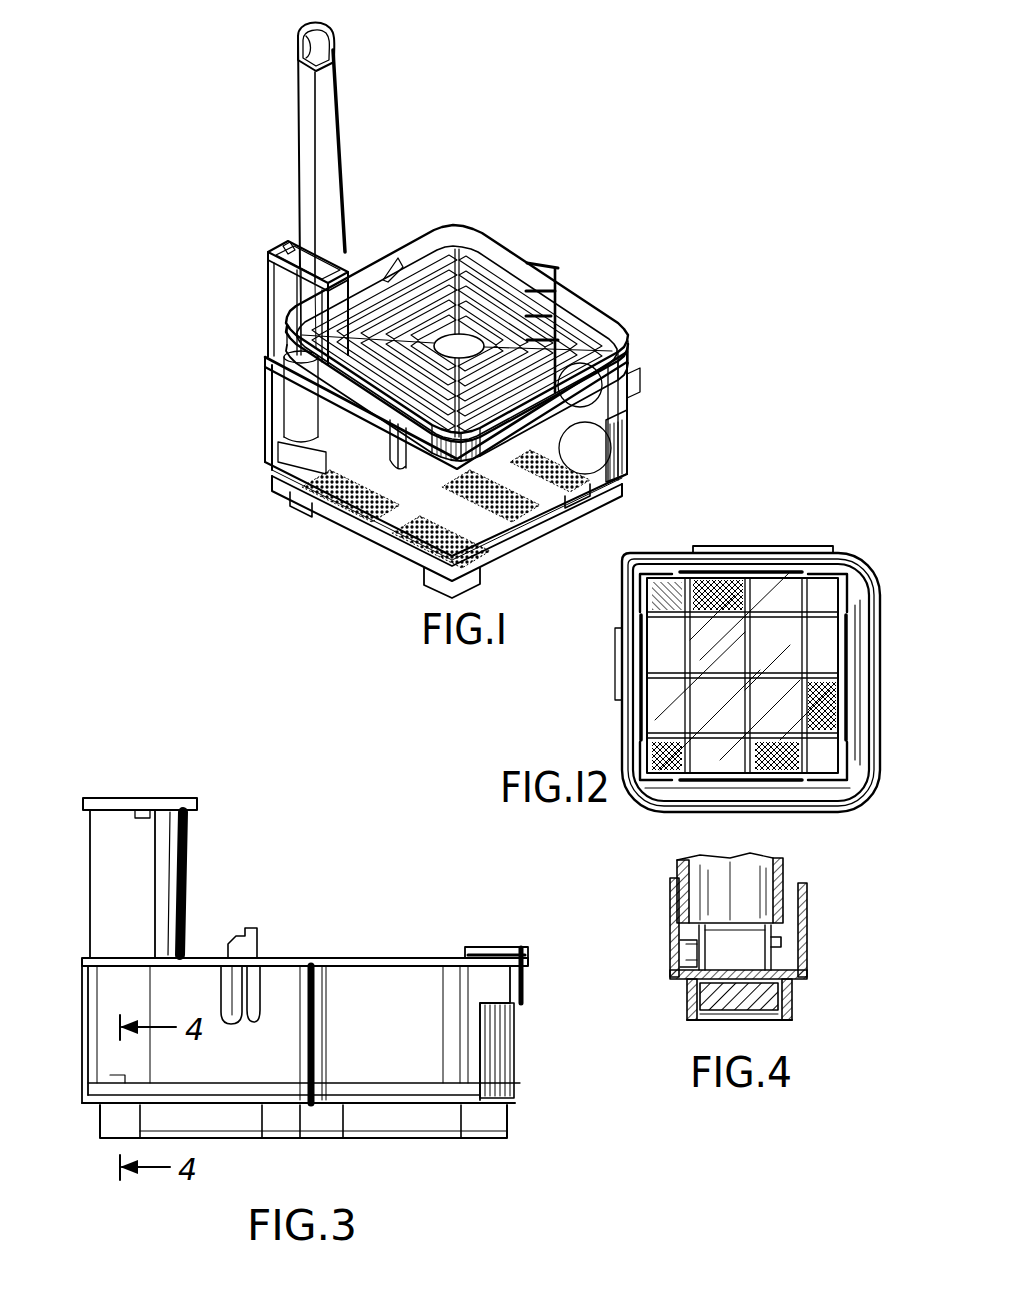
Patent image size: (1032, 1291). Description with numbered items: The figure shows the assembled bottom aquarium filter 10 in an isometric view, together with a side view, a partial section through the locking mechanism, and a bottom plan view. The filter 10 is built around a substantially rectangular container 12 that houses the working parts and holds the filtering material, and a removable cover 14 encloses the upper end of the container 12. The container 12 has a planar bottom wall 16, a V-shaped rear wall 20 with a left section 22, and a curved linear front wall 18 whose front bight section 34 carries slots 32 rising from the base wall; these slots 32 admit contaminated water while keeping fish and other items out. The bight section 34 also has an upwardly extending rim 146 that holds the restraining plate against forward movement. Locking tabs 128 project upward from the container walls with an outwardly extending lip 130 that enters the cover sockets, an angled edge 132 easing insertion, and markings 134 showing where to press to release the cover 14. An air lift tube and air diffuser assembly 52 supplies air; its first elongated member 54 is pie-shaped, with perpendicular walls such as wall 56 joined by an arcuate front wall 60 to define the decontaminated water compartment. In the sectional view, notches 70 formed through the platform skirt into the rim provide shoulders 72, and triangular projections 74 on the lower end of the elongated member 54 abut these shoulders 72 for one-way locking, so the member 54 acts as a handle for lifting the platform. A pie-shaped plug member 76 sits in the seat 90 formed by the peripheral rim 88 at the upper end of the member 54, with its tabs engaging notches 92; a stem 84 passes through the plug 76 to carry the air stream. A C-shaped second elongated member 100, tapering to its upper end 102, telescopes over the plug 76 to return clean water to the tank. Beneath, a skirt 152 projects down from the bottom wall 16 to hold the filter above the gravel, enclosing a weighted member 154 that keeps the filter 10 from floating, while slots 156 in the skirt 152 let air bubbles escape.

In FIG. 1, the bottom aquarium filter 10 is at (668, 281).
In FIG. 12, the bottom aquarium filter 10 is at (586, 681).
In FIG. 1, the container 12 is at (634, 377).
In FIG. 12, the container 12 is at (642, 556).
In FIG. 3, the container 12 is at (421, 945).
In FIG. 1, the cover 14 is at (523, 246).
In FIG. 12, the cover 14 is at (753, 544).
In FIG. 12, the bottom wall 16 is at (879, 580).
In FIG. 4, the bottom wall 16 is at (803, 981).
In FIG. 1, the front wall 18 is at (546, 478).
In FIG. 12, the front wall 18 is at (767, 800).
In FIG. 3, the front wall 18 is at (400, 1066).
In FIG. 1, the rear wall 20 is at (455, 466).
In FIG. 12, the rear wall 20 is at (623, 590).
In FIG. 3, the rear wall 20 is at (300, 1033).
In FIG. 1, the left section 22 is at (357, 468).
In FIG. 3, the left section 22 is at (110, 1052).
In FIG. 1, the slots 32 is at (629, 444).
In FIG. 3, the slots 32 is at (507, 1040).
In FIG. 1, the front bight section 34 is at (641, 393).
In FIG. 12, the front bight section 34 is at (845, 802).
In FIG. 3, the front bight section 34 is at (525, 978).
In FIG. 1, the air lift tube and air diffuser assembly 52 is at (289, 338).
In FIG. 1, the first elongated member 54 is at (284, 307).
In FIG. 3, the first elongated member 54 is at (194, 878).
In FIG. 4, the first elongated member 54 is at (792, 866).
In FIG. 3, the wall 56 is at (147, 920).
In FIG. 3, the arcuate front wall 60 is at (194, 846).
In FIG. 4, the notches 70 is at (686, 953).
In FIG. 4, the shoulders 72 is at (676, 950).
In FIG. 4, the triangular projections 74 is at (783, 944).
In FIG. 1, the plug member 76 is at (283, 247).
In FIG. 1, the stem 84 is at (296, 248).
In FIG. 1, the peripheral rim 88 is at (352, 264).
In FIG. 3, the peripheral rim 88 is at (163, 787).
In FIG. 3, the seat 90 is at (113, 797).
In FIG. 3, the notches 92 is at (144, 808).
In FIG. 1, the second elongated member 100 is at (305, 174).
In FIG. 1, the upper end 102 is at (323, 35).
In FIG. 3, the locking tabs 128 is at (250, 958).
In FIG. 3, the lip 130 is at (253, 928).
In FIG. 3, the edge 132 is at (226, 946).
In FIG. 3, the markings 134 is at (245, 986).
In FIG. 3, the rim 146 is at (491, 947).
In FIG. 1, the skirt 152 is at (361, 523).
In FIG. 12, the skirt 152 is at (781, 570).
In FIG. 3, the skirt 152 is at (498, 1122).
In FIG. 4, the skirt 152 is at (688, 1004).
In FIG. 12, the weighted member 154 is at (758, 641).
In FIG. 4, the weighted member 154 is at (786, 1010).
In FIG. 1, the slots 156 is at (421, 562).
In FIG. 12, the slots 156 is at (684, 571).
In FIG. 3, the slots 156 is at (264, 1140).